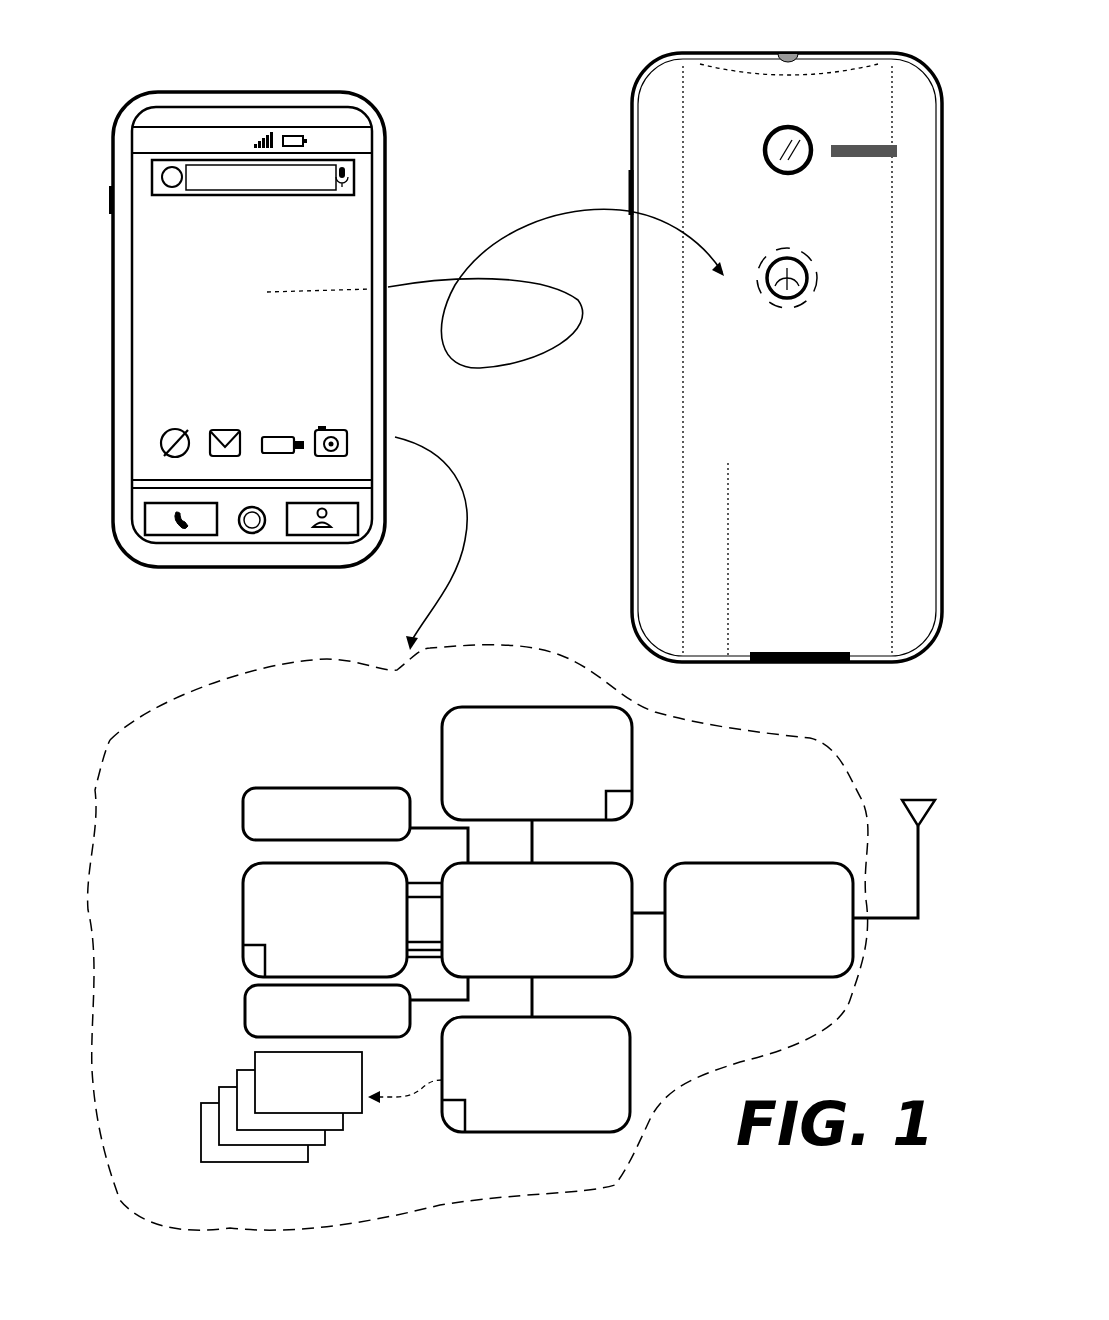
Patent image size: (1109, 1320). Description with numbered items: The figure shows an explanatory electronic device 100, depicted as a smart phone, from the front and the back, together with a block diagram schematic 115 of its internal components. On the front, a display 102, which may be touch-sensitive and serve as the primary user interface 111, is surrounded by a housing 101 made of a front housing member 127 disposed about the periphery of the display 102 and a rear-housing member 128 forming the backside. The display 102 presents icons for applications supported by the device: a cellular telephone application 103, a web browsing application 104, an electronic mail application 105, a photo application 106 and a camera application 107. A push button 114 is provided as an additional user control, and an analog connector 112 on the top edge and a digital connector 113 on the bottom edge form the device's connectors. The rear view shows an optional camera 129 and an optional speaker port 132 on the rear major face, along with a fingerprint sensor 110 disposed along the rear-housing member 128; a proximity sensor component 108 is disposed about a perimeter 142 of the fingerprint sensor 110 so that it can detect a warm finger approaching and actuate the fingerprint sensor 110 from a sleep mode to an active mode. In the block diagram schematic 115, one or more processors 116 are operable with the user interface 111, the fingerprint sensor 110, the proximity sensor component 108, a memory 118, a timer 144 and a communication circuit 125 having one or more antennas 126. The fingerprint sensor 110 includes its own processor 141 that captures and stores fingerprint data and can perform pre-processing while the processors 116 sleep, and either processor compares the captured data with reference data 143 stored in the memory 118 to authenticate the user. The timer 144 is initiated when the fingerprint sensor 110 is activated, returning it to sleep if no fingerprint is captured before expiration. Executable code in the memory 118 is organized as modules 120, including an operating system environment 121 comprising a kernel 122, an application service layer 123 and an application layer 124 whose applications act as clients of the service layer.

The electronic device 100 is at (400, 170).
The housing 101 is at (385, 232).
The display 102 is at (152, 333).
The cellular telephone application 103 is at (152, 545).
The web browsing application 104 is at (176, 429).
The electronic mail application 105 is at (222, 429).
The photo application 106 is at (272, 436).
The camera application 107 is at (322, 429).
The proximity sensor component 108 is at (771, 297).
The fingerprint sensor 110 is at (787, 290).
The user interface 111 is at (442, 750).
The connector 112 is at (788, 53).
The connector 113 is at (790, 661).
The push button 114 is at (112, 186).
The block diagram schematic 115 is at (830, 754).
The one or more processors 116 is at (605, 862).
The memory 118 is at (630, 1060).
The modules 120 is at (307, 1111).
The operating system environment 121 is at (350, 1078).
The kernel 122 is at (335, 1123).
The application service layer 123 is at (313, 1137).
The application layer 124 is at (288, 1155).
The communication circuit 125 is at (745, 863).
The antenna 126 is at (912, 800).
The front housing member 127 is at (383, 370).
The rear-housing member 128 is at (665, 412).
The camera 129 is at (772, 168).
The speaker port 132 is at (882, 158).
The processor 141 is at (243, 958).
The perimeter 142 is at (809, 270).
The reference data 143 is at (453, 1130).
The timer 144 is at (245, 1000).